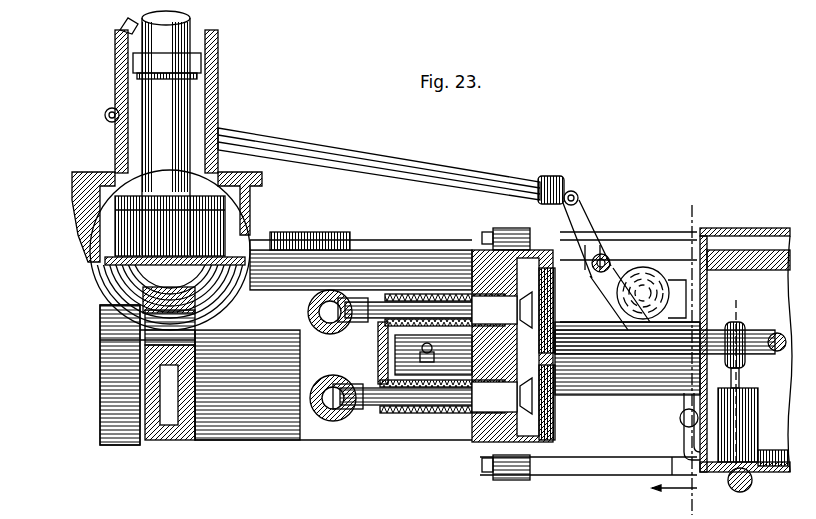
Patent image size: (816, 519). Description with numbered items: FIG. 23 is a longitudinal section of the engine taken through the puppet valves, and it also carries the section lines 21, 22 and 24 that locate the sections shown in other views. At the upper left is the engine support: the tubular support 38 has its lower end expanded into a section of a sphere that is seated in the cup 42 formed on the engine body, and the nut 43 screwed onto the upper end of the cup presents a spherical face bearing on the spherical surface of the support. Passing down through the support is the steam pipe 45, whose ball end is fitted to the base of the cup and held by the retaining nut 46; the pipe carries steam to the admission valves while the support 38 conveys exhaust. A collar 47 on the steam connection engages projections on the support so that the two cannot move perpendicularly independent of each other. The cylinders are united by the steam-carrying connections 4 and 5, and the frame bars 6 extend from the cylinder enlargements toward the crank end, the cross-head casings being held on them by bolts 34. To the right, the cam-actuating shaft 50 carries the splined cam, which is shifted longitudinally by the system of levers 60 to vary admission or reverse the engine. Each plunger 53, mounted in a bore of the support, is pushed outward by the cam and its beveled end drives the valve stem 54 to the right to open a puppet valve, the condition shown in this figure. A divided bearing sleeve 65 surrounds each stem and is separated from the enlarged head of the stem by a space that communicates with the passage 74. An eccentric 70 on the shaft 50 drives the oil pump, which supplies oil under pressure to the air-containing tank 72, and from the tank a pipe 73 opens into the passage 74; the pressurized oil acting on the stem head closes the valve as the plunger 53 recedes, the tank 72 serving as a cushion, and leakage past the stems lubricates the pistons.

The steam-carrying connection 4 is at (548, 445).
The steam-carrying connection 5 is at (172, 440).
The frame bar 6 is at (580, 460).
The section line 21 is at (677, 353).
The section line 22 is at (757, 228).
The section line 24 is at (131, 60).
The bolt 34 is at (735, 487).
The tubular support 38 is at (117, 135).
The cup 42 is at (262, 226).
The nut 43 is at (78, 178).
The steam pipe 45 is at (146, 88).
The retaining nut 46 is at (92, 206).
The collar 47 is at (196, 78).
The cam-actuating shaft 50 is at (760, 332).
The plunger 53 is at (330, 290).
The valve stem 54 is at (423, 302).
The system of levers 60 is at (352, 158).
The bearing sleeve 65 is at (455, 295).
The eccentric 70 is at (733, 333).
The tank 72 is at (645, 290).
The pipe 73 is at (421, 348).
The passage 74 is at (380, 322).